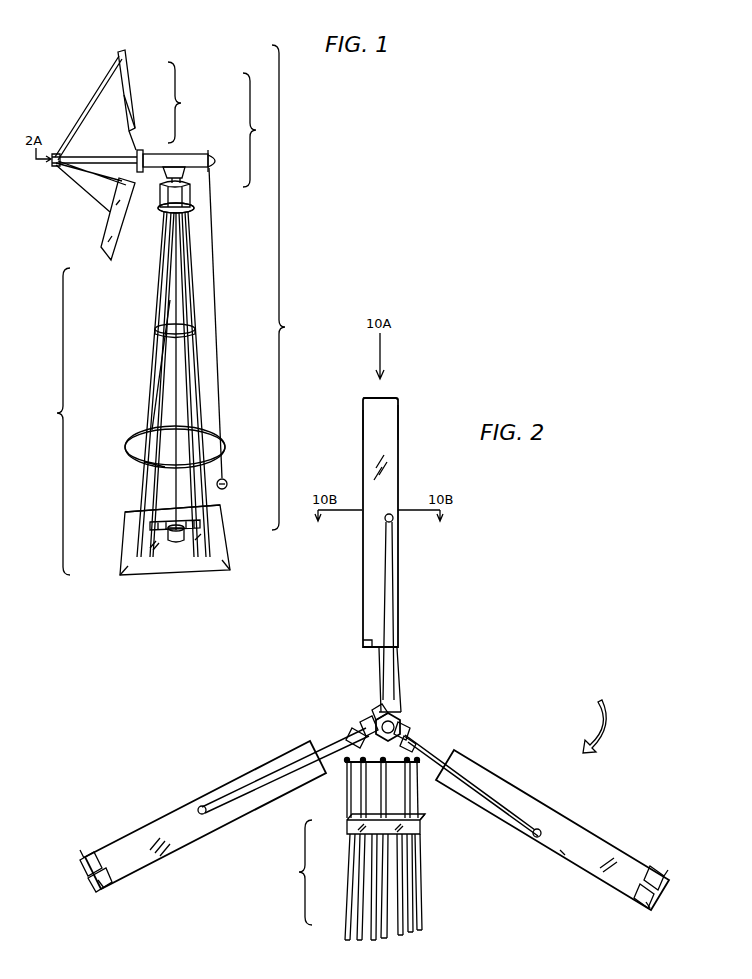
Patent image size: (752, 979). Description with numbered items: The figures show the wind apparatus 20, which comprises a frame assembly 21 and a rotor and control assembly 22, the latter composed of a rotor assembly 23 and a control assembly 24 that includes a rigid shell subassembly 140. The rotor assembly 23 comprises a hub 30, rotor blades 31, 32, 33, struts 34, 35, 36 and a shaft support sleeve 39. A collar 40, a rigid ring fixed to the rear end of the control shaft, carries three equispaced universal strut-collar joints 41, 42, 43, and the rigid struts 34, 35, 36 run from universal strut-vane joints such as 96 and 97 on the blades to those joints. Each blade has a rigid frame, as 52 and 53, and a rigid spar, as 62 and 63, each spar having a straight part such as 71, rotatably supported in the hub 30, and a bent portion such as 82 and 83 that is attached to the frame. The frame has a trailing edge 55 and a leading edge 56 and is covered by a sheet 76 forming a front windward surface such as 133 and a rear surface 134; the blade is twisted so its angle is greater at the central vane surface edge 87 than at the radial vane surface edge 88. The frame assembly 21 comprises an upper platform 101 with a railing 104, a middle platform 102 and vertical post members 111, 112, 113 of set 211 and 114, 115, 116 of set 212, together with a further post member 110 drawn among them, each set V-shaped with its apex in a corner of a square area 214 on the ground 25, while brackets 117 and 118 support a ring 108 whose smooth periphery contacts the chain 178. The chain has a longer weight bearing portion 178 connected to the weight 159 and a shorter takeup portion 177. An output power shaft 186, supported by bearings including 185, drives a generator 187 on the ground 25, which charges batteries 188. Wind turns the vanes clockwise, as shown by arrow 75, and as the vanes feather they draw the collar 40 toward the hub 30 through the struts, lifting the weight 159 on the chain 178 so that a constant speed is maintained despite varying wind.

In FIG. 1, the apparatus 20 is at (288, 287).
In FIG. 1, the frame assembly 21 is at (253, 503).
In FIG. 2, the frame assembly 21 is at (291, 872).
In FIG. 1, the rotor and control assembly 22 is at (259, 130).
In FIG. 1, the rotor assembly 23 is at (184, 102).
In FIG. 1, the control assembly 24 is at (220, 163).
In FIG. 1, the ground 25 is at (185, 560).
In FIG. 1, the hub 30 is at (143, 153).
In FIG. 1, the rotor blade 31 is at (128, 80).
In FIG. 2, the rotor blade 31 is at (406, 565).
In FIG. 2, the rotor blade 32 is at (131, 836).
In FIG. 2, the rotor blade 33 is at (607, 838).
In FIG. 1, the strut 34 is at (86, 110).
In FIG. 2, the strut 34 is at (386, 600).
In FIG. 2, the strut 35 is at (276, 758).
In FIG. 1, the strut 36 is at (90, 197).
In FIG. 2, the strut 36 is at (498, 802).
In FIG. 1, the shaft support sleeve 39 is at (116, 157).
In FIG. 2, the collar 40 is at (401, 716).
In FIG. 2, the universal strut-collar joint 41 is at (376, 706).
In FIG. 2, the universal strut-collar joint 42 is at (366, 725).
In FIG. 2, the universal strut-collar joint 43 is at (404, 727).
In FIG. 2, the blade frame 52 is at (84, 868).
In FIG. 2, the blade frame 53 is at (658, 872).
In FIG. 2, the trailing edge 55 is at (362, 427).
In FIG. 2, the leading edge 56 is at (398, 400).
In FIG. 2, the vane spar 62 is at (332, 742).
In FIG. 2, the vane spar 63 is at (560, 850).
In FIG. 2, the straight part of spar 71 is at (396, 681).
In FIG. 2, the arrow (clockwise direction) 75 is at (601, 718).
In FIG. 1, the cover sheet 76 is at (133, 118).
In FIG. 2, the cover sheet 76 is at (370, 453).
In FIG. 2, the bent portion of spar 82 is at (170, 817).
In FIG. 2, the bent portion of spar 83 is at (648, 906).
In FIG. 2, the central vane surface edge 87 is at (371, 645).
In FIG. 2, the radial vane surface edge 88 is at (362, 398).
In FIG. 2, the universal strut-vane joint 96 is at (385, 521).
In FIG. 2, the universal strut-vane joint 97 is at (202, 805).
In FIG. 1, the upper platform 101 is at (168, 214).
In FIG. 2, the upper platform 101 is at (347, 826).
In FIG. 1, the middle platform 102 is at (155, 329).
In FIG. 2, the railing 104 is at (419, 772).
In FIG. 1, the ring 108 is at (127, 438).
In FIG. 1, the tower legs 110 is at (160, 305).
In FIG. 2, the vertical post member 111 is at (350, 858).
In FIG. 2, the vertical post member 112 is at (358, 884).
In FIG. 2, the vertical post member 113 is at (365, 913).
In FIG. 2, the vertical post member 114 is at (403, 850).
In FIG. 2, the vertical post member 115 is at (413, 886).
In FIG. 2, the vertical post member 116 is at (400, 905).
In FIG. 1, the bracket 117 is at (134, 432).
In FIG. 1, the bracket 118 is at (146, 461).
In FIG. 1, the front vane windward surface 133 is at (106, 229).
In FIG. 2, the rear vane surface 134 is at (390, 420).
In FIG. 1, the rigid shell subassembly 140 is at (176, 165).
In FIG. 1, the weight 159 is at (228, 481).
In FIG. 2, the takeup portion of chain 177 is at (421, 822).
In FIG. 1, the weight bearing portion of chain 178 is at (214, 268).
In FIG. 2, the weight bearing portion of chain 178 is at (362, 803).
In FIG. 2, the bearing 185 is at (378, 908).
In FIG. 1, the output power shaft 186 is at (170, 507).
In FIG. 1, the generator 187 is at (160, 532).
In FIG. 1, the floating battery 188 is at (150, 527).
In FIG. 1, the post set 211 is at (124, 573).
In FIG. 1, the post set 212 is at (210, 562).
In FIG. 1, the square area 214 is at (222, 545).